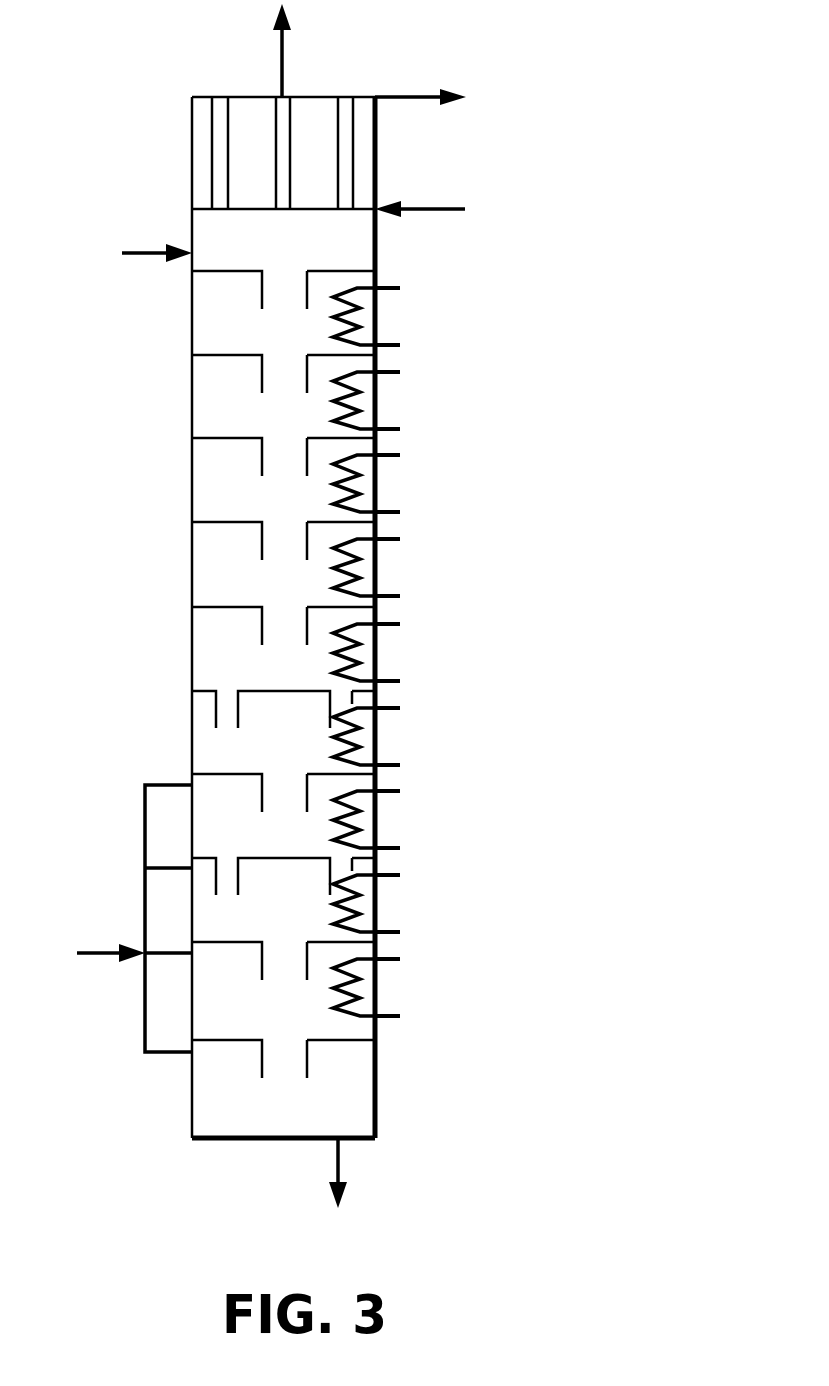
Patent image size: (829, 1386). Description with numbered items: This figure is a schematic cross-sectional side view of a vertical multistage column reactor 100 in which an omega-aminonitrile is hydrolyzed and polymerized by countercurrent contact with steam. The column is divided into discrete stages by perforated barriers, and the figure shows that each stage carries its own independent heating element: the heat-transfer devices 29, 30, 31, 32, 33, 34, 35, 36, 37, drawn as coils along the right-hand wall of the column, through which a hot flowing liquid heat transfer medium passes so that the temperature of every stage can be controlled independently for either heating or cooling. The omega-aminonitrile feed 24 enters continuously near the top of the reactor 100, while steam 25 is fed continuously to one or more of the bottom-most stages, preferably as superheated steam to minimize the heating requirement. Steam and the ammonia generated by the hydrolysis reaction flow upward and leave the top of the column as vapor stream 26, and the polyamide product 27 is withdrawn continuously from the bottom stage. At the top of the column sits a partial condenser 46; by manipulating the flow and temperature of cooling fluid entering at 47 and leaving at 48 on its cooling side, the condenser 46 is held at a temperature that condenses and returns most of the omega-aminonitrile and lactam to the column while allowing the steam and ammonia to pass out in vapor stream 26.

The multistage reactor 100 is at (190, 542).
The partial condenser 46 is at (192, 153).
The vapor stream 26 is at (285, 64).
The cooling fluid outlet 48 is at (412, 94).
The cooling fluid inlet 47 is at (418, 206).
The omega-aminonitrile feed 24 is at (157, 255).
The steam 25 is at (103, 952).
The polyamide product 27 is at (340, 1155).
The heat-transfer device 29 is at (395, 316).
The heat-transfer device 30 is at (395, 400).
The heat-transfer device 31 is at (395, 483).
The heat-transfer device 32 is at (395, 567).
The heat-transfer device 33 is at (395, 652).
The heat-transfer device 34 is at (395, 736).
The heat-transfer device 35 is at (395, 819).
The heat-transfer device 36 is at (395, 903).
The heat-transfer device 37 is at (395, 987).